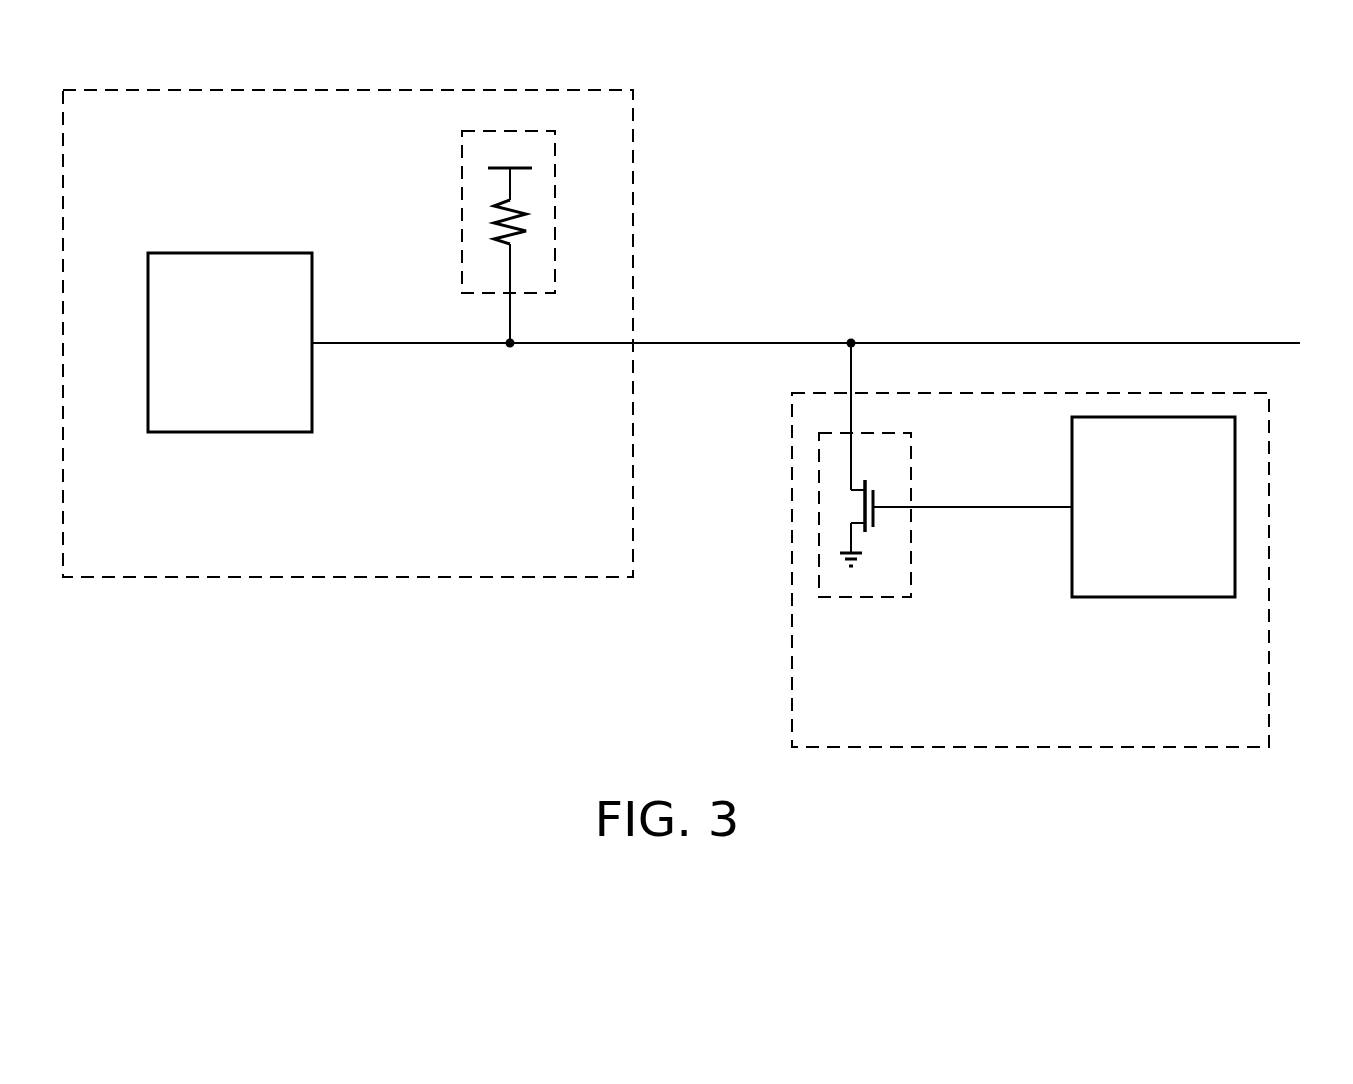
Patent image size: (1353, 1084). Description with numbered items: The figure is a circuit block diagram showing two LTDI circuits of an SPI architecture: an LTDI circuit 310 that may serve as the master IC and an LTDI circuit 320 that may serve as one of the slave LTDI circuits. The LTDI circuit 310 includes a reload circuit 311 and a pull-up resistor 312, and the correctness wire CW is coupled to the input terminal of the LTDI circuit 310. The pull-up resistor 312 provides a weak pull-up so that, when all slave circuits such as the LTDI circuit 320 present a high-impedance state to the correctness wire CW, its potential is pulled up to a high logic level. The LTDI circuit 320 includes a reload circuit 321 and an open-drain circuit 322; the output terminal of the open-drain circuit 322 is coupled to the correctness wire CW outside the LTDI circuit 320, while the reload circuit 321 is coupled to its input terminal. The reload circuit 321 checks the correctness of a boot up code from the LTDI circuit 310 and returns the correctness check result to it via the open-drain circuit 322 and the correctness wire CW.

The LTDI circuit 310 is at (333, 90).
The reload circuit 311 is at (229, 252).
The pull-up resistor 312 is at (462, 180).
The LTDI circuit 320 is at (1270, 614).
The reload circuit 321 is at (1153, 598).
The open-drain circuit 322 is at (912, 463).
The correctness wire CW is at (723, 342).